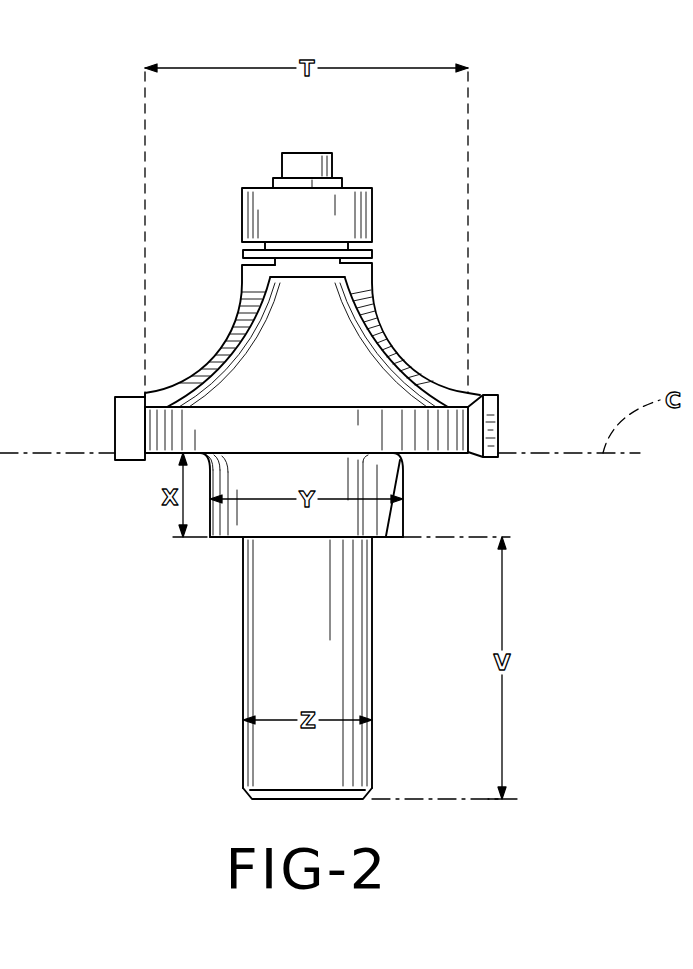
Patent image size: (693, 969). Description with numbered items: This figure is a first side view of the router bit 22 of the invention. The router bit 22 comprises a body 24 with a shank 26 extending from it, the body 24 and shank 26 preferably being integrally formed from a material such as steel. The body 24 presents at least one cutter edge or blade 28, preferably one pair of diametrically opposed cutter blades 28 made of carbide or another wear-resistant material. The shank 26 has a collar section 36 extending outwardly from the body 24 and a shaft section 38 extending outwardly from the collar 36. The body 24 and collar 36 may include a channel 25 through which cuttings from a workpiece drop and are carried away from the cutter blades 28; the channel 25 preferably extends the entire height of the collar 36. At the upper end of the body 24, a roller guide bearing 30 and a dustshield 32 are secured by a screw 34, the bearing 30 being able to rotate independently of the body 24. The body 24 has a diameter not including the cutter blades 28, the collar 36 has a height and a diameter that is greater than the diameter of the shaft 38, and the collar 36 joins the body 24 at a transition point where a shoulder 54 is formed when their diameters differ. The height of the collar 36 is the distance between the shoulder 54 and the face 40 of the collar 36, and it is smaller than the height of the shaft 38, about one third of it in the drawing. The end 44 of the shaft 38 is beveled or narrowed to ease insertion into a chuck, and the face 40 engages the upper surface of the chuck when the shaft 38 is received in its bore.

The router bit 22 is at (502, 357).
The body 24 is at (272, 364).
The channel 25 is at (397, 517).
The shank 26 is at (373, 624).
The cutter blade 28 is at (250, 290).
The roller guide bearing 30 is at (373, 208).
The dustshield 32 is at (372, 255).
The screw 34 is at (307, 162).
The collar section 36 is at (285, 519).
The shaft section 38 is at (268, 650).
The face 40 is at (225, 538).
The end 44 is at (250, 798).
The shoulder 54 is at (160, 457).